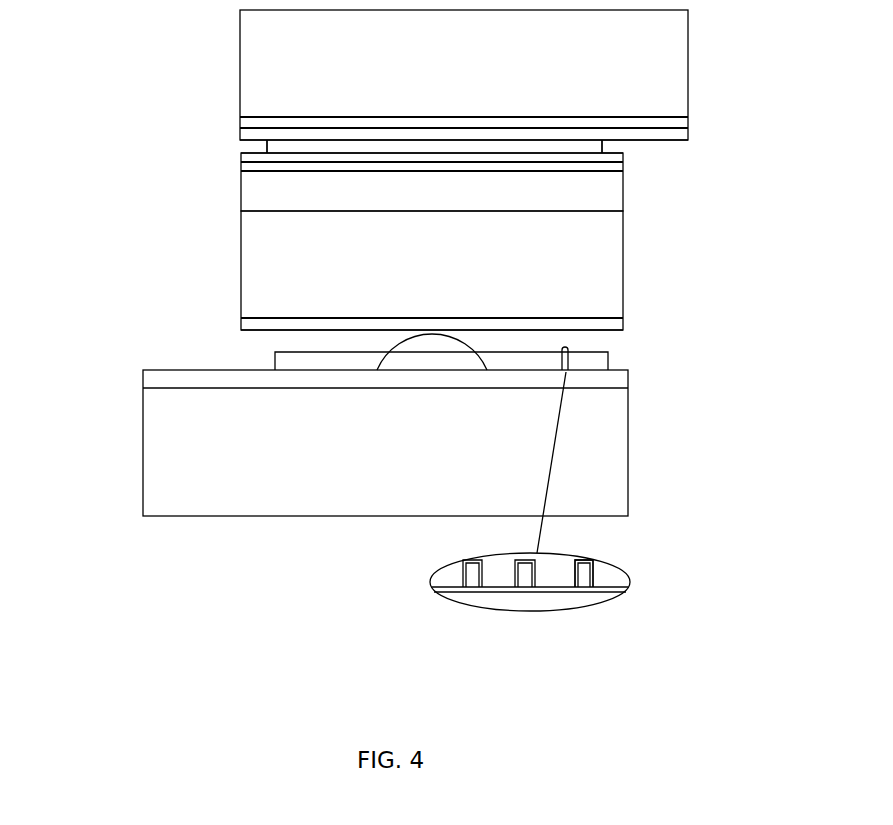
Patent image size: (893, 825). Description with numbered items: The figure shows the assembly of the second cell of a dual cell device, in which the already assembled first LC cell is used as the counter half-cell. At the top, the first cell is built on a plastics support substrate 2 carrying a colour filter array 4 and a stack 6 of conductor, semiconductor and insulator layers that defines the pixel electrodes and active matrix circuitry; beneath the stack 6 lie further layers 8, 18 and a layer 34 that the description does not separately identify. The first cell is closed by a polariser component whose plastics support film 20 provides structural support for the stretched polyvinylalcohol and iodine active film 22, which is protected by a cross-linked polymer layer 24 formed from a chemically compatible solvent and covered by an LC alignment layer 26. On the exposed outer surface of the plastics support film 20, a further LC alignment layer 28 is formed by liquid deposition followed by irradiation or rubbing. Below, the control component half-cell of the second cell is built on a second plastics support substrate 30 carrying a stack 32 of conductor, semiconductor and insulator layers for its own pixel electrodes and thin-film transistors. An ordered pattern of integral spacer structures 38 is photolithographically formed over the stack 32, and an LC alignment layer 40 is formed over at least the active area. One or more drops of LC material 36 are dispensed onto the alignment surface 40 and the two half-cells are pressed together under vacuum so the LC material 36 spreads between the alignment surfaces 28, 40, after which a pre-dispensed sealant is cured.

The support substrate 2 is at (252, 57).
The colour filter array 4 is at (248, 120).
The stack of conductor, semiconductor and insulator layers 6 is at (248, 133).
The connector 8 is at (275, 146).
The spacer 18 is at (275, 146).
The plastics support film 20 is at (607, 248).
The active film 22 is at (607, 189).
The cross-linked polymer layer 24 is at (623, 155).
The LC alignment layer 26 is at (243, 160).
The LC alignment layer 28 is at (613, 323).
The support substrate 30 is at (202, 493).
The stack of conductor, semiconductor and insulator layers 32 is at (157, 382).
The interposer layer 34 is at (283, 360).
The LC material 36 is at (427, 343).
The spacer structures 38 is at (580, 590).
The LC alignment layer 40 is at (590, 570).